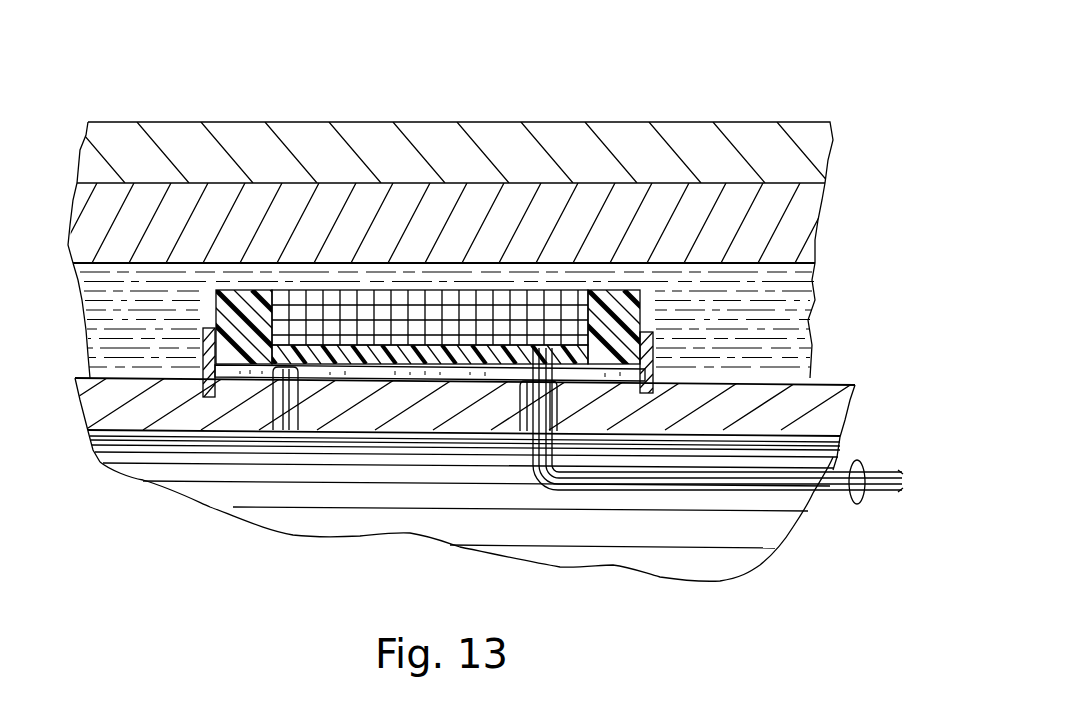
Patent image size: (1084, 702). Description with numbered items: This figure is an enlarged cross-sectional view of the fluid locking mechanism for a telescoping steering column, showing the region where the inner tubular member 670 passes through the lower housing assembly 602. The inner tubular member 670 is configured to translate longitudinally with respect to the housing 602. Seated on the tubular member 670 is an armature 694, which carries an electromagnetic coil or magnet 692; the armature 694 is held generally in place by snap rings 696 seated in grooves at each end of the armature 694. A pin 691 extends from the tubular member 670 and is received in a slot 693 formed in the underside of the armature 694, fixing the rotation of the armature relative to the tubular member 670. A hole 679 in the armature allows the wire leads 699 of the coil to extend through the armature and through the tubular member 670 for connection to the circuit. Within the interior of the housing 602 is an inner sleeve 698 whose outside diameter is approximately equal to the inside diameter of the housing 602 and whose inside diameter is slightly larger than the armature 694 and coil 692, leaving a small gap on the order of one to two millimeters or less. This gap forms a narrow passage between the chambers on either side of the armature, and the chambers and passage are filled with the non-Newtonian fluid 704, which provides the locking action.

The lower housing assembly 602 is at (289, 120).
The inner sleeve 698 is at (797, 213).
The non-Newtonian fluid 704 is at (780, 353).
The electromagnetic coil or magnet 692 is at (438, 280).
The armature 694 is at (608, 290).
The snap rings 696 is at (201, 352).
The slot 693 is at (333, 378).
The inner tubular member 670 is at (155, 407).
The pin 691 is at (285, 395).
The hole 679 is at (505, 410).
The wire leads 699 is at (857, 504).